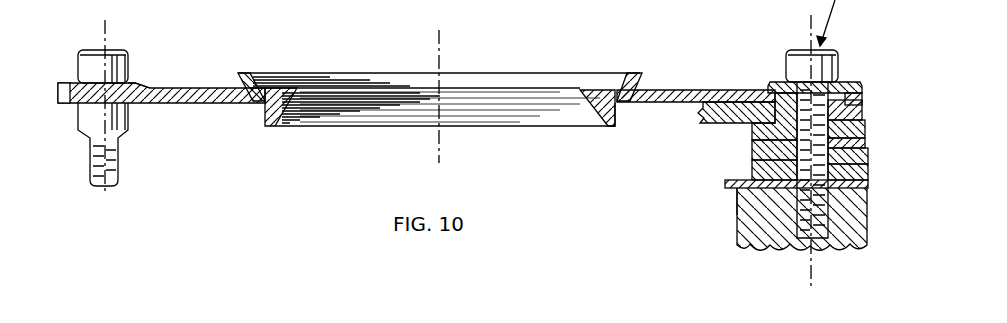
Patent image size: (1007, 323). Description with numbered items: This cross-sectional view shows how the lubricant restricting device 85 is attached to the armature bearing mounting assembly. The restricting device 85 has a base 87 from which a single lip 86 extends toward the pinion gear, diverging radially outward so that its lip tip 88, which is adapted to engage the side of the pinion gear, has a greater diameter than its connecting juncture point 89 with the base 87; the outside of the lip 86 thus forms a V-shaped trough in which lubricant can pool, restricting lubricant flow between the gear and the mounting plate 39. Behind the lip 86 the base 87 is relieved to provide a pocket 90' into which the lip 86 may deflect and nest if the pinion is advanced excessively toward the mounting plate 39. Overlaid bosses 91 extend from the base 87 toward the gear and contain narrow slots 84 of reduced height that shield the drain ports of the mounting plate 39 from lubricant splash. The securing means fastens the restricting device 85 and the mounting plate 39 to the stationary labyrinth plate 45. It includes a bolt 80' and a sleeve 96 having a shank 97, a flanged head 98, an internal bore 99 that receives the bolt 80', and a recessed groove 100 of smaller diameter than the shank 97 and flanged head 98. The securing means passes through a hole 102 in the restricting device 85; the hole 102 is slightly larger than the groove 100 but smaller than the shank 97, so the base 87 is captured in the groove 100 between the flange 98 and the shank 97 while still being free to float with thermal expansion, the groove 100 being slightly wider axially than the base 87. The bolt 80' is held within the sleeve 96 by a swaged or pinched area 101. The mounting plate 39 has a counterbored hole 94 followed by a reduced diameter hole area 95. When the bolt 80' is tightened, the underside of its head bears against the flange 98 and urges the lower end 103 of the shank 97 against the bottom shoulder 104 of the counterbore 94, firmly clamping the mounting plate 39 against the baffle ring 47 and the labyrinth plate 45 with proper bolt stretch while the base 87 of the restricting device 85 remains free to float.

The narrow slot 84 is at (90, 95).
The retaining device base 87 is at (160, 105).
The boss 91 is at (140, 83).
The lubricant restricting device 85 is at (550, 58).
The lip tip 88 is at (238, 66).
The juncture point 89 is at (268, 86).
The lip 86 is at (638, 86).
The pocket 90' is at (696, 116).
The swaged or pinched area 101 is at (780, 108).
The bolt 80' is at (800, 120).
The flanged head 98 is at (850, 82).
The hole 102 is at (852, 92).
The recessed groove 100 is at (790, 86).
The mounting plate 39 is at (772, 140).
The sleeve 96 is at (768, 160).
The internal bore 99 is at (848, 115).
The shank 97 is at (860, 124).
The counterbored hole 94 is at (858, 138).
The lower end of shank 103 is at (866, 150).
The reduced diameter hole area 95 is at (858, 178).
The baffle ring 47 is at (740, 186).
The bottom shoulder 104 is at (740, 191).
The labyrinth plate 45 is at (752, 233).